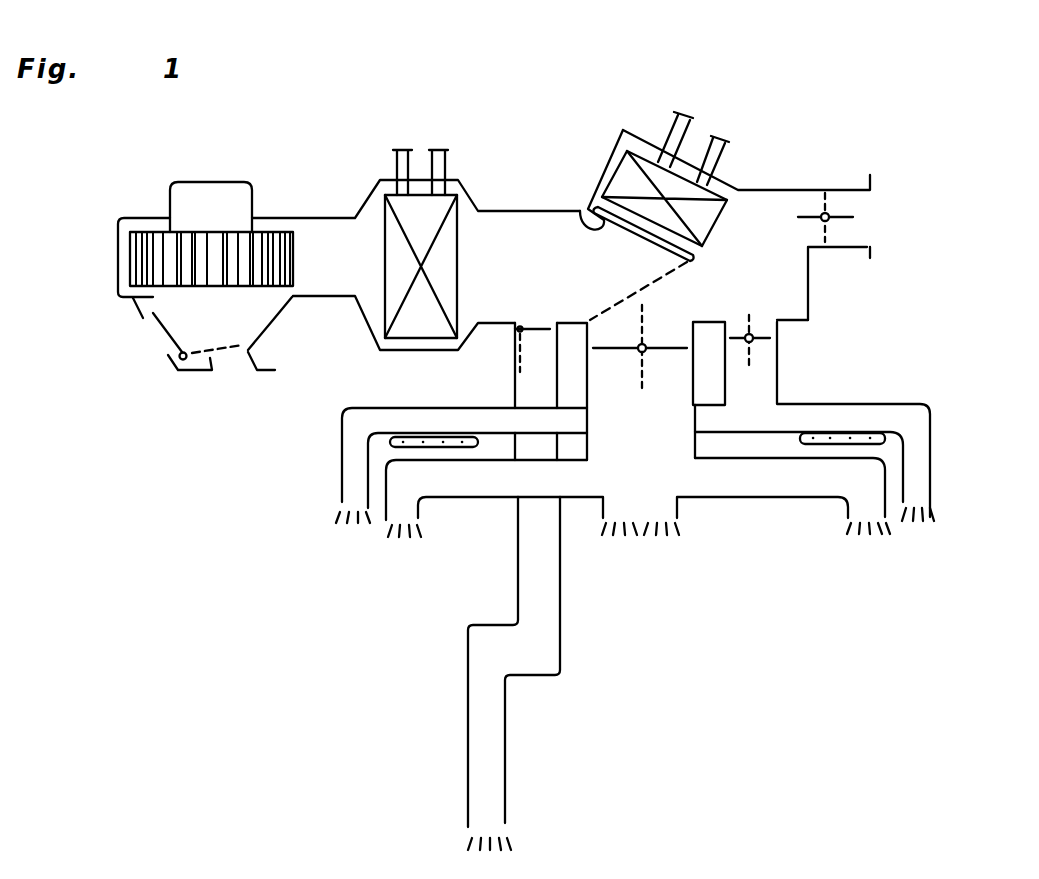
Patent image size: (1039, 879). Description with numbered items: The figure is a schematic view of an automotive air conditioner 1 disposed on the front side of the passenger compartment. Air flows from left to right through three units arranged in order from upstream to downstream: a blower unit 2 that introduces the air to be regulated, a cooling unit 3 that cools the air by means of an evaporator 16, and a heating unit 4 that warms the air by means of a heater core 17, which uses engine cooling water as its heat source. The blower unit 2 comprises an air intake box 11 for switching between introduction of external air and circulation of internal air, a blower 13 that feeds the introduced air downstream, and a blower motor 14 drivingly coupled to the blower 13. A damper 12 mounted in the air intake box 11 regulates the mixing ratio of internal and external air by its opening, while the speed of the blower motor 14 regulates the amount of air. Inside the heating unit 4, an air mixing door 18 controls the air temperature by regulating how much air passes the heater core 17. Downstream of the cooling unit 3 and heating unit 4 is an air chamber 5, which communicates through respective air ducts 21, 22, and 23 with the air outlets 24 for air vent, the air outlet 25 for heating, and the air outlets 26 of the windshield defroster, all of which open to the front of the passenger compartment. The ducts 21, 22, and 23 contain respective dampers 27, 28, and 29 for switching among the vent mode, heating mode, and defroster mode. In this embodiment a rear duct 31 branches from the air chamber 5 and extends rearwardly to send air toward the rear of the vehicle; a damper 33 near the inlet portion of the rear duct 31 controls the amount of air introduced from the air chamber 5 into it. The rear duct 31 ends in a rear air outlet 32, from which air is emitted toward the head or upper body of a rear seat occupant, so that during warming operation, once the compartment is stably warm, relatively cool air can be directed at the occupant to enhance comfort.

The air conditioner 1 is at (208, 422).
The blower unit 2 is at (262, 186).
The cooling unit 3 is at (473, 180).
The heating unit 4 is at (725, 172).
The air chamber 5 is at (603, 254).
The air intake box 11 is at (277, 320).
The damper 12 is at (167, 333).
The blower 13 is at (132, 260).
The blower motor 14 is at (168, 189).
The evaporator 16 is at (383, 252).
The heater core 17 is at (722, 217).
The air mixing door 18 is at (578, 212).
The air duct 21 is at (630, 427).
The air duct 22 is at (842, 188).
The air duct 23 is at (777, 360).
The air outlets for air vent 24 is at (410, 513).
The air outlet for heating 25 is at (867, 233).
The air outlets of windshield defroster 26 is at (393, 448).
The damper 27 is at (663, 353).
The damper 28 is at (848, 210).
The damper 29 is at (757, 335).
The rear duct 31 is at (562, 596).
The rear air outlet 32 is at (490, 823).
The damper 33 is at (532, 327).